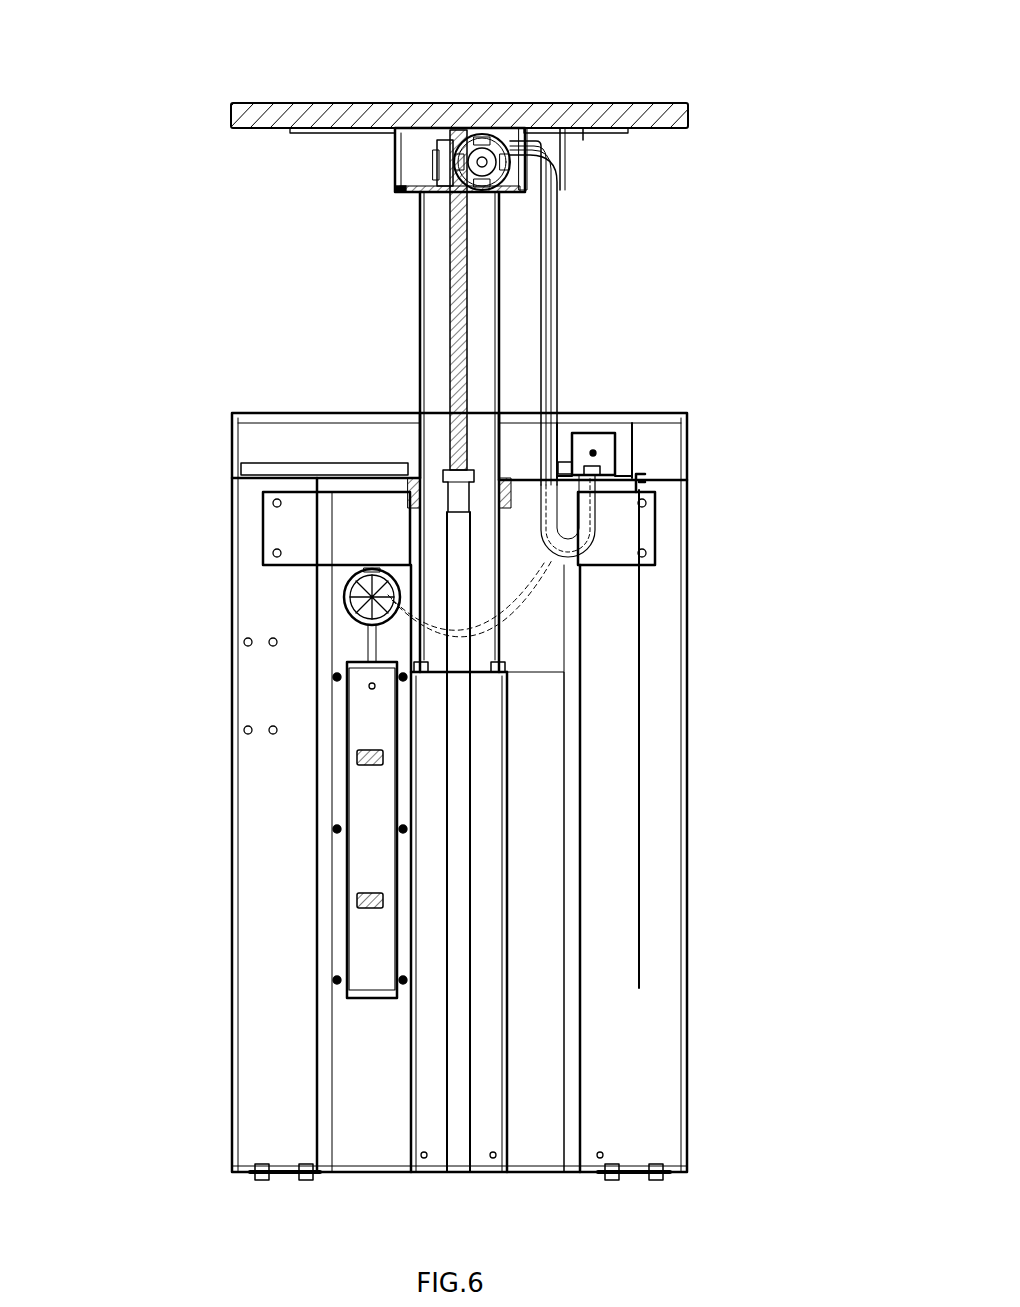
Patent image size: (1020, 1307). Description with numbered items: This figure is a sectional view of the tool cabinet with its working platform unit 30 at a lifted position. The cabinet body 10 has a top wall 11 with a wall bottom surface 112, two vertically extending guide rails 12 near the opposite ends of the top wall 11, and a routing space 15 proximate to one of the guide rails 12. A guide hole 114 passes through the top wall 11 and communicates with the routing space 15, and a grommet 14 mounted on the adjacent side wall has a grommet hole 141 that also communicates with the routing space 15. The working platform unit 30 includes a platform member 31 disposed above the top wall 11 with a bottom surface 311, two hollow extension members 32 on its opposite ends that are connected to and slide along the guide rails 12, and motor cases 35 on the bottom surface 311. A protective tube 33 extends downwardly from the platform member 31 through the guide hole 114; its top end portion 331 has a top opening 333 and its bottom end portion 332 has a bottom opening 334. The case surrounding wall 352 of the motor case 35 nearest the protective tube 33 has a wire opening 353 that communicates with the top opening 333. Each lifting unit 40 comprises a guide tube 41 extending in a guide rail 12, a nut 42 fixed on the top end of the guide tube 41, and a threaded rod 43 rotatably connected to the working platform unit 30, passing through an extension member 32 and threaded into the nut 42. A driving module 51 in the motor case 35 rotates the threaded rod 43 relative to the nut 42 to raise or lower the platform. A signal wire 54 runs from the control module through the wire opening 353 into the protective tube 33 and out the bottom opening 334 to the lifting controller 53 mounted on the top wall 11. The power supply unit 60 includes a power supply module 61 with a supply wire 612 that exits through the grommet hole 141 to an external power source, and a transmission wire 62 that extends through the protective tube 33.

The cabinet body 10 is at (692, 870).
The top wall 11 is at (272, 468).
The wall bottom surface 112 is at (262, 481).
The guide hole 114 is at (590, 468).
The guide rails 12 is at (510, 746).
The grommet 14 is at (346, 604).
The grommet hole 141 is at (318, 578).
The routing space 15 is at (532, 1105).
The working platform unit 30 is at (497, 80).
The platform member 31 is at (648, 103).
The bottom surface 311 is at (660, 130).
The extension members 32 is at (419, 276).
The protective tube 33 is at (558, 258).
The top end portion 331 is at (583, 130).
The bottom end portion 332 is at (577, 468).
The top opening 333 is at (556, 132).
The bottom opening 334 is at (596, 510).
The motor cases 35 is at (400, 198).
The case surrounding wall 352 is at (395, 190).
The wire opening 353 is at (507, 133).
The lifting units 40 is at (478, 812).
The guide tube 41 is at (472, 1065).
The nut 42 is at (443, 480).
The threaded rod 43 is at (467, 236).
The driving modules 51 is at (435, 138).
The lifting controller 53 is at (607, 440).
The signal wire 54 is at (593, 548).
The power supply unit 60 is at (345, 812).
The power supply module 61 is at (368, 930).
The supply wire 612 is at (368, 640).
The transmission wire 62 is at (553, 628).